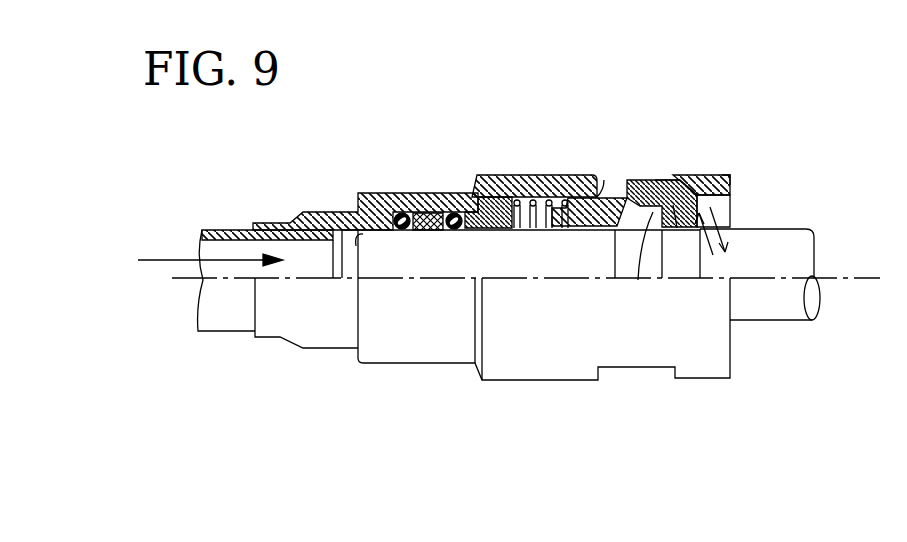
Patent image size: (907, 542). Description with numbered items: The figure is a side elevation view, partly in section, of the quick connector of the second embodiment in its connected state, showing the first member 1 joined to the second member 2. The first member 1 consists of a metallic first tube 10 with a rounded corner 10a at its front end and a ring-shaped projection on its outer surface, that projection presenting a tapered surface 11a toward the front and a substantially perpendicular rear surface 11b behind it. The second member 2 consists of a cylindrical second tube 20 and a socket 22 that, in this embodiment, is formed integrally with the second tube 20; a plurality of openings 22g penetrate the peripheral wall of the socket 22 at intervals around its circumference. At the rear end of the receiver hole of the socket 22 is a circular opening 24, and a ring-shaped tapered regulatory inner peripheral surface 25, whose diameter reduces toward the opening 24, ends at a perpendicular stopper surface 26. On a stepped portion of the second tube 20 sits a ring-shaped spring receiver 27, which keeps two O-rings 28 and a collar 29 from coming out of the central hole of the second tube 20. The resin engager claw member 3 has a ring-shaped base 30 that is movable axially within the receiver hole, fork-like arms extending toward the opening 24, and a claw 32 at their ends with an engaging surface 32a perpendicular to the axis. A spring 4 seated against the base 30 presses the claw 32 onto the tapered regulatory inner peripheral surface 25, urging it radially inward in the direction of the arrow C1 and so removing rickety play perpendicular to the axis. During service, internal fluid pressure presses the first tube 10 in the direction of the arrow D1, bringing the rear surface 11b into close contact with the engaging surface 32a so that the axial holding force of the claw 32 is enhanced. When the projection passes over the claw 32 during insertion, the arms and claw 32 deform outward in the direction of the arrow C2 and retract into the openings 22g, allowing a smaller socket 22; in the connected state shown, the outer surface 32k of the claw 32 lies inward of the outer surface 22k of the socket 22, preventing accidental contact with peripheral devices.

The first member 1 is at (760, 306).
The second member 2 is at (322, 220).
The engager claw member 3 is at (560, 232).
The spring 4 is at (532, 200).
The first tube 10 is at (488, 258).
The rounded corner 10a is at (356, 246).
The tapered surface 11a is at (625, 196).
The rear surface 11b is at (638, 280).
The second tube 20 is at (233, 235).
The socket 22 is at (490, 175).
The openings 22g is at (603, 177).
The outer surface of the socket 22k is at (723, 177).
The opening 24 is at (730, 206).
The tapered regulatory inner peripheral surface 25 is at (695, 178).
The perpendicular stopper surface 26 is at (730, 181).
The ring-shaped spring receiver 27 is at (472, 195).
The O-rings 28 is at (405, 212).
The collar 29 is at (430, 212).
The ring-shaped base 30 is at (573, 232).
The claw 32 is at (677, 228).
The engaging surface 32a is at (662, 180).
The outer surface of the claw 32k is at (683, 180).
The arrow C1 is at (722, 246).
The arrow C2 is at (722, 246).
The arrow D1 is at (172, 260).